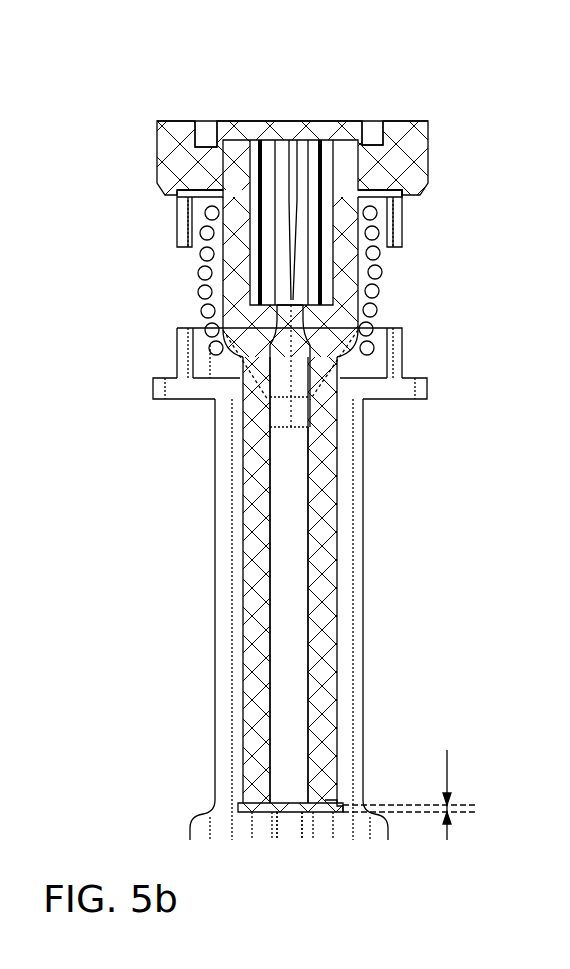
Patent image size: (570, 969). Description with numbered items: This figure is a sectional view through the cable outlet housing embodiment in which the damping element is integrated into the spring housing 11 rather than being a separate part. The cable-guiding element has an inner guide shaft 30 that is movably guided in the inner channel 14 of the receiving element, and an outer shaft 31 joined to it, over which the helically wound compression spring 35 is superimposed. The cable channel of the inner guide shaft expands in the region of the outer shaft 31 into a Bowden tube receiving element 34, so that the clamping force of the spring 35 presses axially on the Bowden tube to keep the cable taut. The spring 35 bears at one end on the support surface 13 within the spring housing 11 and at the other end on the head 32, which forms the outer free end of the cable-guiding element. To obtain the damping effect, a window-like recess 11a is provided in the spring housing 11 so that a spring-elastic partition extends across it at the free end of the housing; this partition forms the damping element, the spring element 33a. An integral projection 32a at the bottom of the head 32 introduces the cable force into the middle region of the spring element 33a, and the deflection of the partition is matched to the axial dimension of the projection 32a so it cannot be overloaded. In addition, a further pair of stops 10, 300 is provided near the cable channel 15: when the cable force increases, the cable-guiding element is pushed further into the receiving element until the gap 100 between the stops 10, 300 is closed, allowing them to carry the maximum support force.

The head 32 is at (407, 138).
The Bowden tube receiving element 34 is at (292, 160).
The outer shaft 31 is at (237, 277).
The spring element 33a is at (397, 220).
The projection 32a is at (393, 190).
The compression spring 35 is at (198, 267).
The window-like recess 11a is at (405, 287).
The spring housing 11 is at (397, 350).
The support surface 13 is at (357, 385).
The inner channel 14 is at (350, 578).
The inner guide shaft 30 is at (323, 538).
The stop 10 is at (327, 812).
The stop 300 is at (327, 802).
The gap 100 is at (420, 795).
The cable channel 15 is at (290, 827).